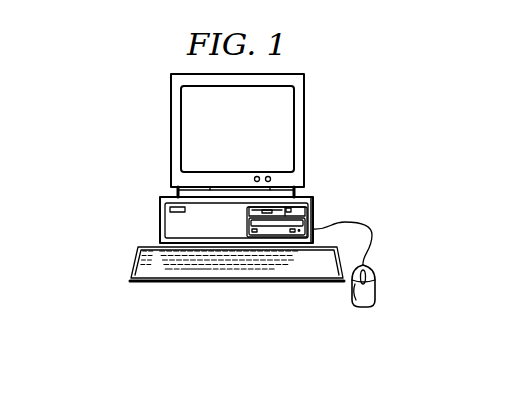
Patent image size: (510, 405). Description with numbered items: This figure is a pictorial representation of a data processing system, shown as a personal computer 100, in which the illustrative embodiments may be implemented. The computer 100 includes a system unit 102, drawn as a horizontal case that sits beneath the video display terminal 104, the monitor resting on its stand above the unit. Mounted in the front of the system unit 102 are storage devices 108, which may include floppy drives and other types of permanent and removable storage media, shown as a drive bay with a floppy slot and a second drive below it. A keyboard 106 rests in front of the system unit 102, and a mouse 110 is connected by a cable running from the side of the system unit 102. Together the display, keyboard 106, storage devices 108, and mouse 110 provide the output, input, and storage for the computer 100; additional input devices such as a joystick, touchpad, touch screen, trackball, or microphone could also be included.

The computer 100 is at (112, 120).
The system unit 102 is at (160, 218).
The video display terminal 104 is at (305, 130).
The keyboard 106 is at (153, 283).
The storage devices 108 is at (283, 209).
The mouse 110 is at (363, 307).